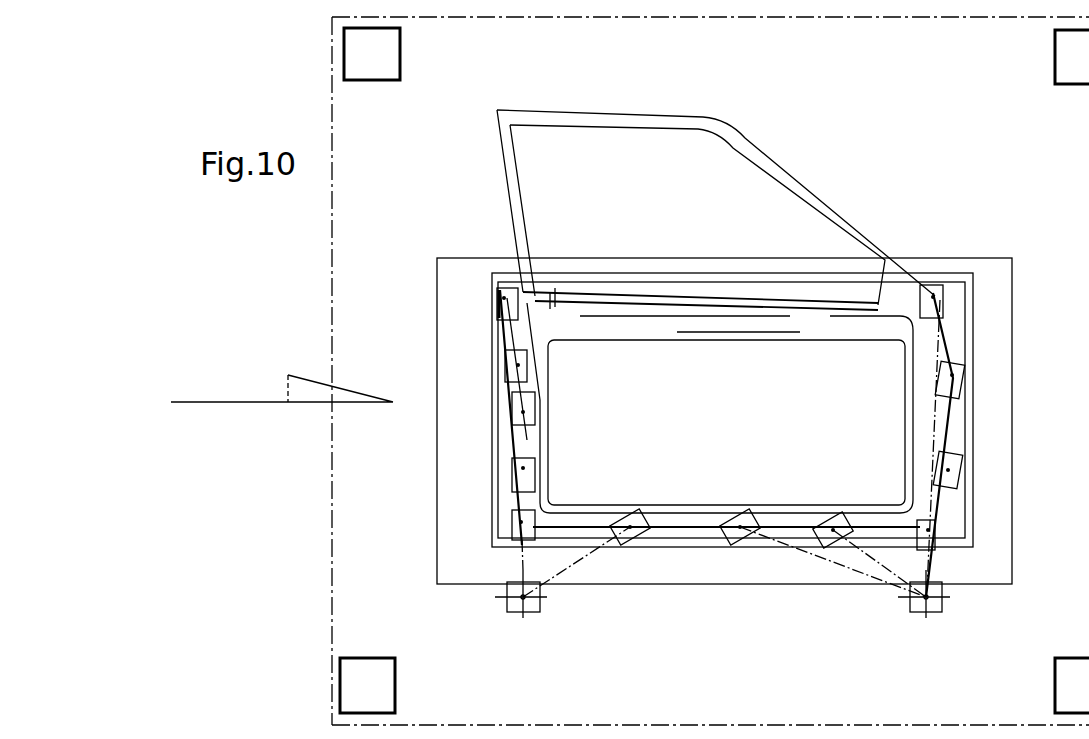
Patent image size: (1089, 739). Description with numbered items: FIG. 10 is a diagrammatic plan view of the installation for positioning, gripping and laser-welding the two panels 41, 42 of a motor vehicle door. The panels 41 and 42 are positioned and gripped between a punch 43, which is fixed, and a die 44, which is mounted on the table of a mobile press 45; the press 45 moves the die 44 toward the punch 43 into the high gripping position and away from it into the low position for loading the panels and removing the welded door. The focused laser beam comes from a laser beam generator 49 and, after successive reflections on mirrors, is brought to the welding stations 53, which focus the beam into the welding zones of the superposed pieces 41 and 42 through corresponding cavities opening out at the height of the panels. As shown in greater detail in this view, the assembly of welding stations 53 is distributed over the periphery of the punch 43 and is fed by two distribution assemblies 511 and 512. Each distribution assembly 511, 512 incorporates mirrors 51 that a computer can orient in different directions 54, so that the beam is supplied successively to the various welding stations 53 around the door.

The panel 41 is at (716, 200).
The panel 42 is at (865, 117).
The punch 43 is at (732, 449).
The die 44 is at (830, 625).
The mobile press 45 is at (640, 575).
The laser beam generator 49 is at (523, 468).
The mirror 51 is at (731, 614).
The distribution assembly 511 is at (512, 607).
The distribution assembly 512 is at (940, 612).
The welding station 53 is at (505, 398).
The direction 54 is at (512, 442).